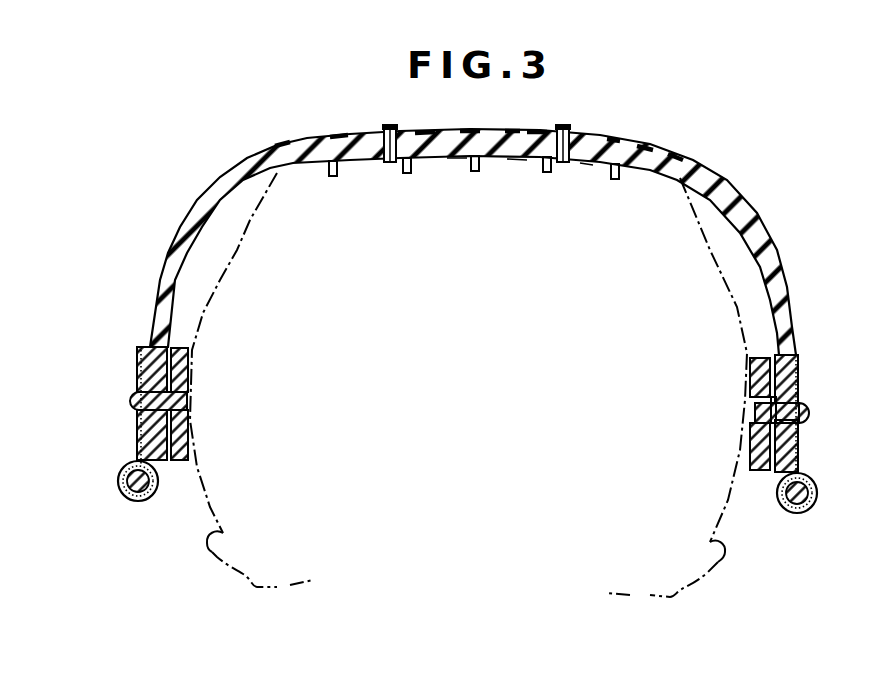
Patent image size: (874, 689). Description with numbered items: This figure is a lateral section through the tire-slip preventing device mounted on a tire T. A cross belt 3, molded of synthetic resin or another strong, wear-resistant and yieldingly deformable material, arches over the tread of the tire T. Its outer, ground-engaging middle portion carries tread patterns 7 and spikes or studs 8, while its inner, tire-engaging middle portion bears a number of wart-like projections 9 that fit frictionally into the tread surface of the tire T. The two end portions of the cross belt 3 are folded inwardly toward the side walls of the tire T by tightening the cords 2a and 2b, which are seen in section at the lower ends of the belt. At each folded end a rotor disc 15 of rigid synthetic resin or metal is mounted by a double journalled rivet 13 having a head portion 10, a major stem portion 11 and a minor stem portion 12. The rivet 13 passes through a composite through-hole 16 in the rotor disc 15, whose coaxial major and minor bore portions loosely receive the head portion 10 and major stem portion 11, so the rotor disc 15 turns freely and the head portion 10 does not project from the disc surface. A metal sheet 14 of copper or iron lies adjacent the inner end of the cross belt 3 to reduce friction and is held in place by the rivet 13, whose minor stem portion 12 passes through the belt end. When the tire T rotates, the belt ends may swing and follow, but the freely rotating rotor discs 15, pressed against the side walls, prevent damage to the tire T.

The cord 2a is at (815, 494).
The cord 2b is at (126, 496).
The cross belt 3 is at (733, 177).
The tread pattern 7 is at (470, 133).
The spike or stud 8 is at (390, 125).
The wart-like projection 9 is at (438, 160).
The head portion 10 is at (772, 418).
The major stem portion 11 is at (802, 398).
The minor stem portion 12 is at (807, 418).
The double journalled rivet 13 is at (852, 416).
The sheet 14 is at (800, 452).
The rotor disc 15 is at (750, 371).
The composite through-hole 16 is at (760, 400).
The tire T is at (716, 277).